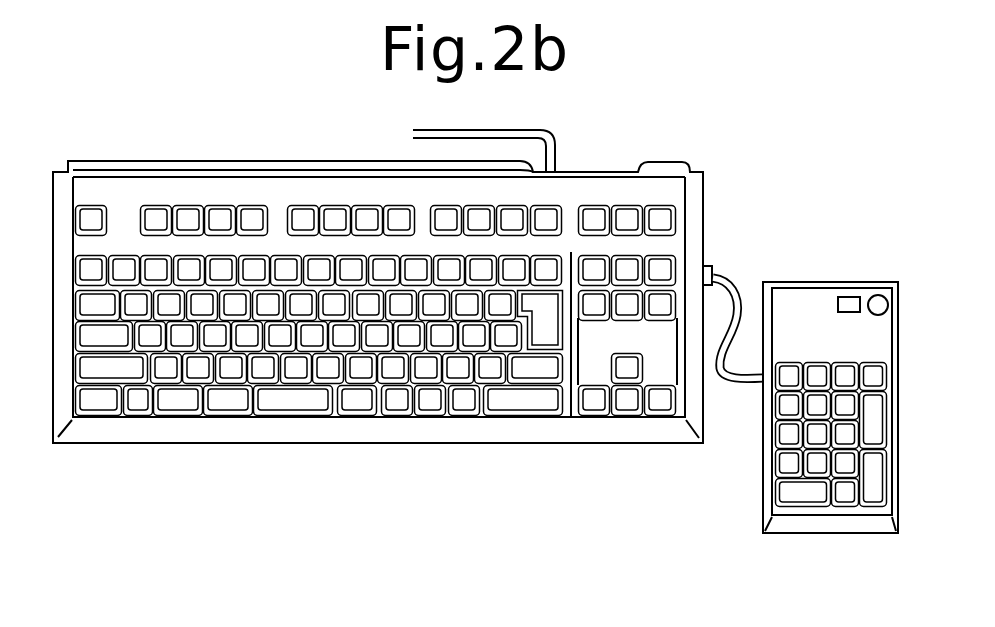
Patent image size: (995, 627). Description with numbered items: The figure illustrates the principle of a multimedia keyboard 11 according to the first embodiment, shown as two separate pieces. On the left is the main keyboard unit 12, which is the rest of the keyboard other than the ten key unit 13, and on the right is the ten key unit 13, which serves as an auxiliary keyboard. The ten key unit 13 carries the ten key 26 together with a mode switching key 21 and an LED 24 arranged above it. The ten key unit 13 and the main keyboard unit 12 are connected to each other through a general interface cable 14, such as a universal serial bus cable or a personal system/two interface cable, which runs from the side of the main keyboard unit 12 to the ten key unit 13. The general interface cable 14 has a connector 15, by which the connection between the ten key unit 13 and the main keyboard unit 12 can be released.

The multimedia keyboard 11 is at (458, 463).
The main keyboard unit 12 is at (305, 162).
The ten key unit 13 is at (852, 282).
The general interface cable 14 is at (740, 383).
The connector 15 is at (707, 268).
The mode switching key 21 is at (880, 295).
The LED 24 is at (838, 305).
The ten key 26 is at (823, 507).